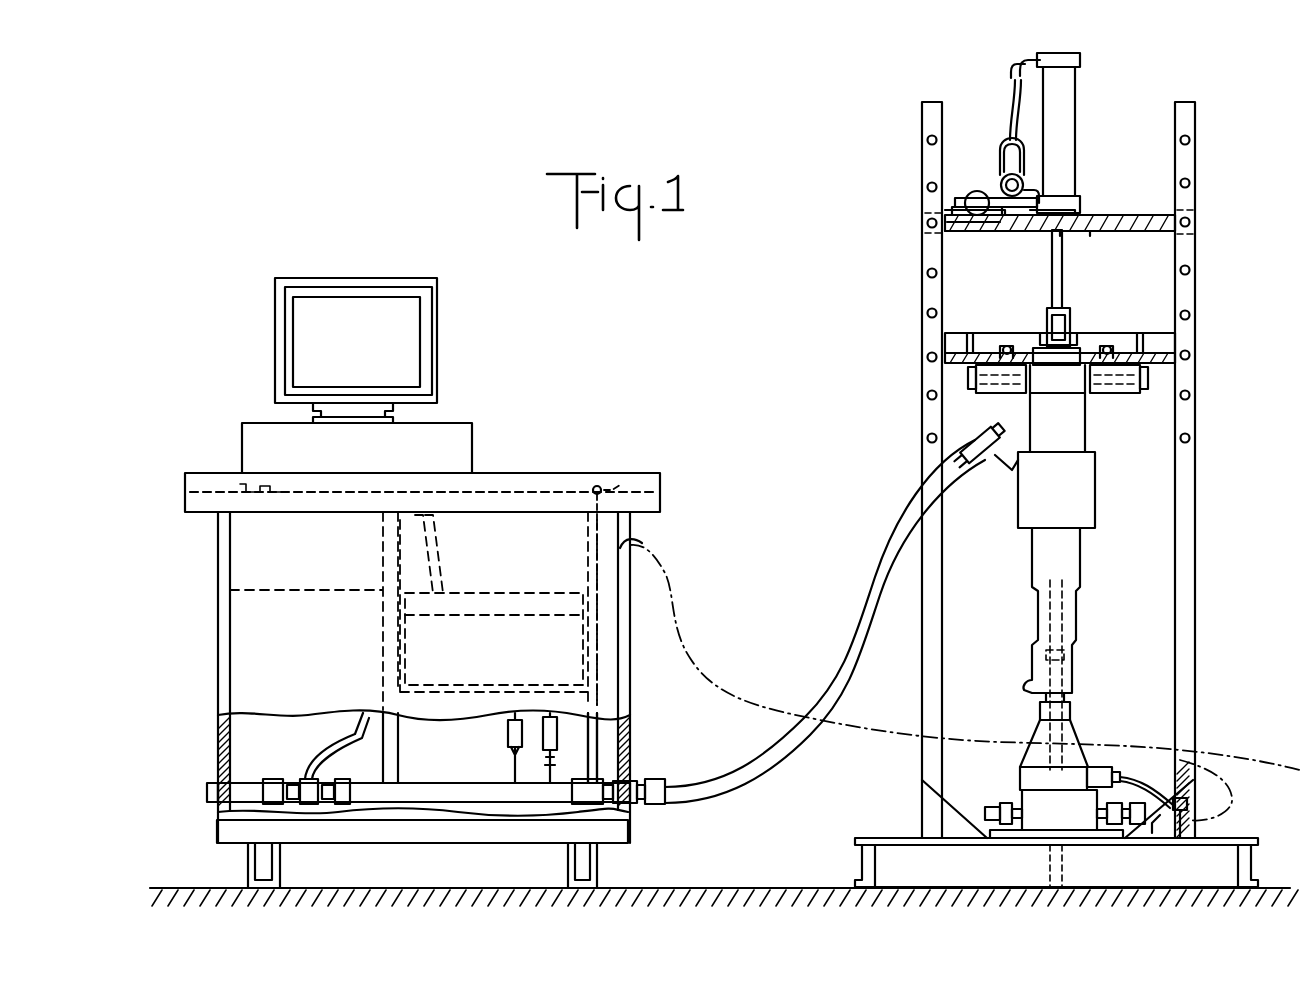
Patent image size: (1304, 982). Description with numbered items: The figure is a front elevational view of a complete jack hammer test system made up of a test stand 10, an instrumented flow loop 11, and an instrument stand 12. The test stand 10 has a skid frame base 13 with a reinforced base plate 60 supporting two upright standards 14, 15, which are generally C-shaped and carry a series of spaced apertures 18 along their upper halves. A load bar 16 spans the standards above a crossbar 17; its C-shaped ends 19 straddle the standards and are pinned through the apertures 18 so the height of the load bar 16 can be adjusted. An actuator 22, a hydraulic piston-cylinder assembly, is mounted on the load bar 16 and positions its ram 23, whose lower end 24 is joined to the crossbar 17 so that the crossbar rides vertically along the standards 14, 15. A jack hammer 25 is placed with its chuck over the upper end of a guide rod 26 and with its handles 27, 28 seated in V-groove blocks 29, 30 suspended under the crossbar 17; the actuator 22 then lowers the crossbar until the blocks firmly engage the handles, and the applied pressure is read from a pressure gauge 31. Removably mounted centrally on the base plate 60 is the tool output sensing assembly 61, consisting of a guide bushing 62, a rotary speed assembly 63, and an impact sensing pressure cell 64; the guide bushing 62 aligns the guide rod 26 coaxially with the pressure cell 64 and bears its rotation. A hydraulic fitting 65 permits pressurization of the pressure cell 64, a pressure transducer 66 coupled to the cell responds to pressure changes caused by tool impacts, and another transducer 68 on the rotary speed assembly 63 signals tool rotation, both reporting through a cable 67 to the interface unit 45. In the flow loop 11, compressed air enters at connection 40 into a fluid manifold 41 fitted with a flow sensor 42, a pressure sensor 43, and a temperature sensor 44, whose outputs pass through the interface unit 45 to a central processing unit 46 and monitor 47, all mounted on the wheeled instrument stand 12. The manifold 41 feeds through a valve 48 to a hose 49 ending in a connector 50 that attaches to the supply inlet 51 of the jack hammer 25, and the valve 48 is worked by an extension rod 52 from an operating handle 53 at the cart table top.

The test stand 10 is at (868, 340).
The instrumented flow loop 11 is at (725, 652).
The instrument stand 12 is at (604, 460).
The skid frame base 13 is at (868, 848).
The upright standard 14 is at (922, 452).
The upright standard 15 is at (1195, 410).
The load bar 16 is at (1132, 215).
The crossbar 17 is at (1130, 333).
The spaced apertures 18 is at (928, 222).
The C-shaped ends 19 is at (921, 240).
The actuator 22 is at (1076, 117).
The ram 23 is at (1062, 258).
The lower end of the ram 24 is at (1070, 320).
The jack hammer 25 is at (1096, 525).
The guide rod 26 is at (1060, 702).
The jack hammer handle 27 is at (973, 380).
The jack hammer handle 28 is at (1118, 393).
The V-groove block 29 is at (999, 394).
The V-groove block 30 is at (1102, 394).
The pressure gauge 31 is at (1000, 189).
The compressed air supply connection 40 is at (212, 796).
The fluid manifold 41 is at (418, 783).
The flow sensor 42 is at (302, 775).
The pressure sensor 43 is at (508, 740).
The temperature sensor 44 is at (555, 735).
The interface unit 45 is at (503, 622).
The central processing unit 46 is at (470, 432).
The monitor 47 is at (437, 320).
The valve 48 is at (605, 796).
The hose 49 is at (835, 681).
The connector 50 is at (984, 468).
The supply inlet 51 is at (1010, 482).
The extension rod 52 is at (598, 745).
The operating handle 53 is at (612, 480).
The reinforced base plate 60 is at (1236, 838).
The tool output sensing assembly 61 is at (1014, 745).
The guide bushing 62 is at (1086, 730).
The rotary speed assembly 63 is at (1020, 775).
The impact sensing pressure cell 64 is at (1072, 820).
The hydraulic fitting 65 is at (988, 810).
The pressure transducer 66 is at (1116, 838).
The cable 67 is at (1233, 777).
The transducer 68 is at (1117, 770).